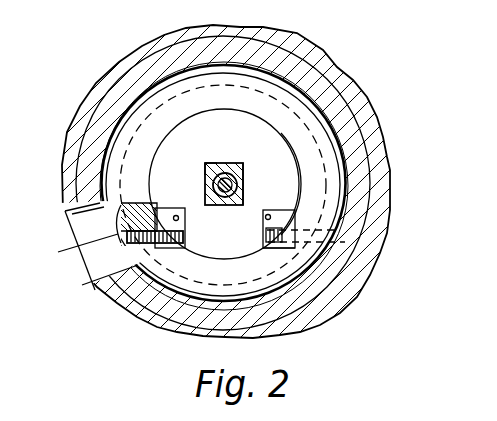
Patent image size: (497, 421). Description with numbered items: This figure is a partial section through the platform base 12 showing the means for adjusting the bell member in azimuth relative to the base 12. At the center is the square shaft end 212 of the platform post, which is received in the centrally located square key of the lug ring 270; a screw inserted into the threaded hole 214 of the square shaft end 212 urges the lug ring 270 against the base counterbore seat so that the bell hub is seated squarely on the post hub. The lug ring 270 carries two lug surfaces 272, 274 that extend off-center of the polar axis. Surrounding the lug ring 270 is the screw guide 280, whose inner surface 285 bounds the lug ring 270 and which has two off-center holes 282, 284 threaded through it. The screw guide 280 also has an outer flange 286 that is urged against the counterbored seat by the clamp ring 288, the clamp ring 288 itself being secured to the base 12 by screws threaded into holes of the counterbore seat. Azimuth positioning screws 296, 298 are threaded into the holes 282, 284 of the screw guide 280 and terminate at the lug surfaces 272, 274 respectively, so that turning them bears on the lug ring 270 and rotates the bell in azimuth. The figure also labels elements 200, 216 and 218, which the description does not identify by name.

The base 12 is at (334, 65).
The valve unit 200 is at (243, 172).
The square shaft end 212 is at (222, 163).
The threaded hole 214 is at (243, 185).
The block corner 216 is at (205, 163).
The pin 218 is at (213, 185).
The lug ring 270 is at (208, 132).
The lug surface 272 is at (179, 218).
The lug surface 274 is at (265, 227).
The screw guide 280 is at (313, 147).
The off-center hole 282 is at (163, 243).
The off-center hole 284 is at (283, 243).
The inner surface 285 is at (297, 197).
The outer flange 286 is at (267, 80).
The clamp ring 288 is at (92, 268).
The azimuth positioning screw 296 is at (117, 213).
The azimuth positioning screw 298 is at (337, 242).